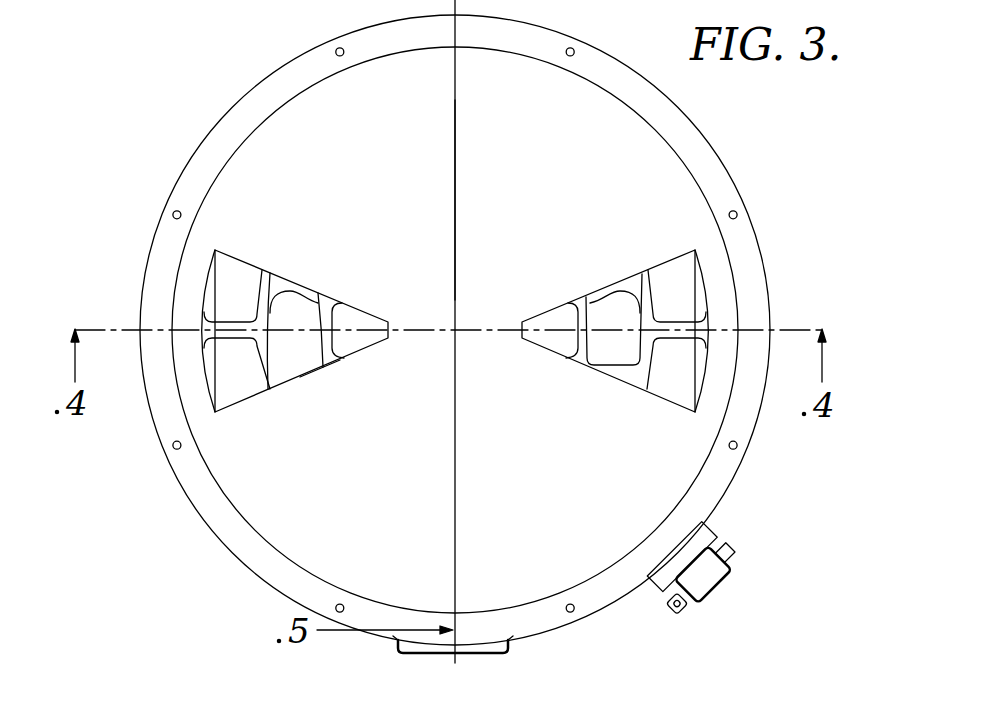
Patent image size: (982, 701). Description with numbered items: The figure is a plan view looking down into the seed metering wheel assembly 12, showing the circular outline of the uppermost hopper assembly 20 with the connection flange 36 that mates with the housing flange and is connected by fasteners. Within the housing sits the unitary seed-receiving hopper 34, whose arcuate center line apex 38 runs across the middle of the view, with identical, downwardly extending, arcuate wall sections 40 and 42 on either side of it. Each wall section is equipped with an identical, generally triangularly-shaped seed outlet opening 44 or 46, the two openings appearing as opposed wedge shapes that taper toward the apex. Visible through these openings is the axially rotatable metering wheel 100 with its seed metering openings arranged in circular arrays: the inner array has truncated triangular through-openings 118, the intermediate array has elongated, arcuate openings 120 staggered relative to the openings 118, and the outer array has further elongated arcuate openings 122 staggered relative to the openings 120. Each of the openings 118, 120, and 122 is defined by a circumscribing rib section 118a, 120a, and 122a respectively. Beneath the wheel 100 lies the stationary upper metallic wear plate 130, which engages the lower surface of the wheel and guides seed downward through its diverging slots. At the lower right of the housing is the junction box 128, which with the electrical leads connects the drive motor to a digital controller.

The seed metering wheel assembly 12 is at (144, 126).
The hopper assembly 20 is at (722, 142).
The seed-receiving hopper 34 is at (290, 132).
The connection flange 36 is at (290, 78).
The arcuate center line apex 38 is at (456, 181).
The arcuate wall section 40 is at (584, 492).
The arcuate wall section 42 is at (353, 492).
The seed outlet opening 44 is at (682, 262).
The seed outlet opening 46 is at (213, 391).
The metering wheel 100 is at (345, 367).
The truncated triangular through-opening 118 is at (347, 312).
The rib section 118a is at (577, 338).
The elongated arcuate opening 120 is at (305, 302).
The rib section 120a is at (637, 292).
The elongated arcuate opening 122 is at (258, 271).
The rib section 122a is at (682, 338).
The junction box 128 is at (711, 593).
The wear plate 130 is at (682, 297).